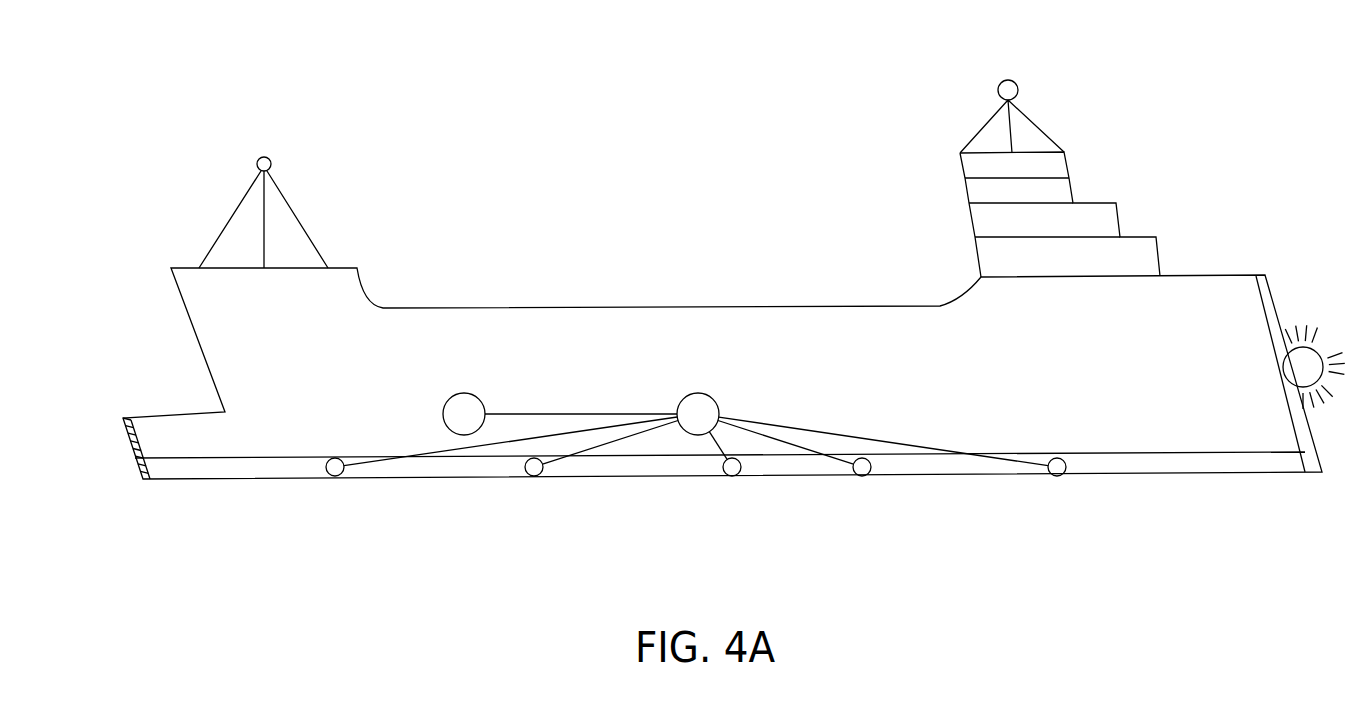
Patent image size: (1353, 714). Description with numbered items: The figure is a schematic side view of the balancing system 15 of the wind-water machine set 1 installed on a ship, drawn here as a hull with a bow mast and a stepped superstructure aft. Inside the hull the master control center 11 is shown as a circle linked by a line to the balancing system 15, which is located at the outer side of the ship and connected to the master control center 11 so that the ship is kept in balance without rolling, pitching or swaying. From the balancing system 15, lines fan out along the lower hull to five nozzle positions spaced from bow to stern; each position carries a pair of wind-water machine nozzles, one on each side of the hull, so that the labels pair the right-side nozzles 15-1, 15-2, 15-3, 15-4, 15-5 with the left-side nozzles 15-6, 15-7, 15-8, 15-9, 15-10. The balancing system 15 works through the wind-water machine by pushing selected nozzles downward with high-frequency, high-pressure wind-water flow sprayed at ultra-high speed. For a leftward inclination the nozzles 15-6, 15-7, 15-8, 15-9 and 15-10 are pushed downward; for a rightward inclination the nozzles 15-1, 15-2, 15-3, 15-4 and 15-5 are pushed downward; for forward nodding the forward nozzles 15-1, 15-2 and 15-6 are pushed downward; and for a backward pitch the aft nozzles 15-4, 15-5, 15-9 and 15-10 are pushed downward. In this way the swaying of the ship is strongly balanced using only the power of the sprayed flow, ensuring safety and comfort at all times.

The wind-water machine set 1 is at (395, 58).
The master control center 11 is at (464, 392).
The balancing system 15 is at (697, 392).
The wind-water machine nozzle 15-1 is at (320, 517).
The wind-water machine nozzle 15-2 is at (520, 517).
The wind-water machine nozzle 15-3 is at (717, 518).
The wind-water machine nozzle 15-4 is at (870, 517).
The wind-water machine nozzle 15-5 is at (1047, 516).
The wind-water machine nozzle 15-6 is at (320, 517).
The wind-water machine nozzle 15-7 is at (520, 517).
The wind-water machine nozzle 15-8 is at (717, 518).
The wind-water machine nozzle 15-9 is at (870, 517).
The wind-water machine nozzle 15-10 is at (1047, 516).